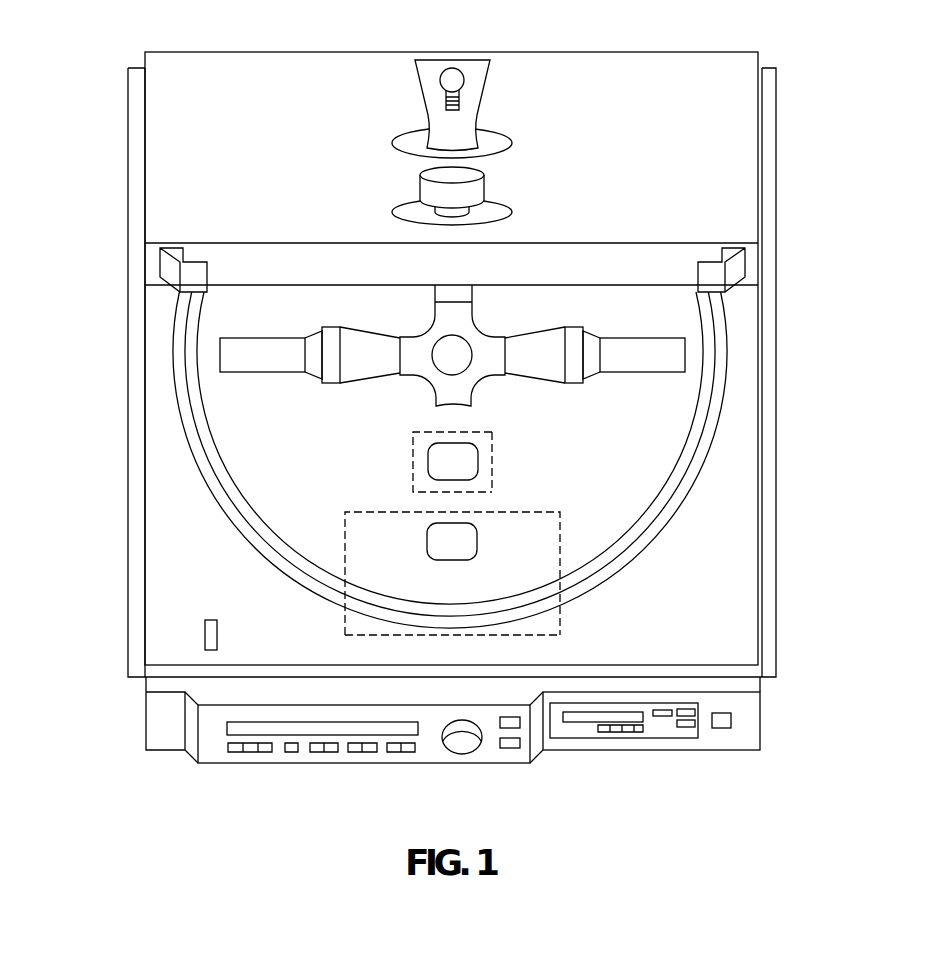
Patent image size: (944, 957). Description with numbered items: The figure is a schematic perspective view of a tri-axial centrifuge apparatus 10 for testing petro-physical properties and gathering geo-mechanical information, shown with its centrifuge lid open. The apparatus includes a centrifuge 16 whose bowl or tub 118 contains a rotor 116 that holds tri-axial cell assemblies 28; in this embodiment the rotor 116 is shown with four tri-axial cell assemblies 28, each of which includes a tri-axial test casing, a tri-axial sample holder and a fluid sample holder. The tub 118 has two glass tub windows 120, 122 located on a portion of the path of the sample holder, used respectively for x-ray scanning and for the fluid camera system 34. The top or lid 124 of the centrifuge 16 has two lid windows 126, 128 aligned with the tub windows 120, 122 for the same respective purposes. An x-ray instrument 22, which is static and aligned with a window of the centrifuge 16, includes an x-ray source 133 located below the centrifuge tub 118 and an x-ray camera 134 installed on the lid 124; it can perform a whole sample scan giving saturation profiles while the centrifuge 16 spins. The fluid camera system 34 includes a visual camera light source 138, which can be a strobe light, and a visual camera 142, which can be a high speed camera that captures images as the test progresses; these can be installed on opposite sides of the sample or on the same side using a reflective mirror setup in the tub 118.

The tri-axial centrifuge apparatus 10 is at (104, 336).
The lid 124 is at (682, 85).
The lid window 128 is at (493, 142).
The visual camera light source 138 is at (422, 88).
The lid window 126 is at (492, 212).
The x-ray camera 134 is at (435, 190).
The centrifuge 16 is at (735, 440).
The tub 118 is at (655, 457).
The tri-axial cell assembly 28 is at (452, 372).
The rotor 116 is at (430, 370).
The visual camera 142 is at (448, 459).
The fluid camera system 34 is at (493, 468).
The tub window 122 is at (465, 460).
The x-ray instrument 22 is at (473, 560).
The x-ray source 133 is at (562, 625).
The tub window 120 is at (462, 540).